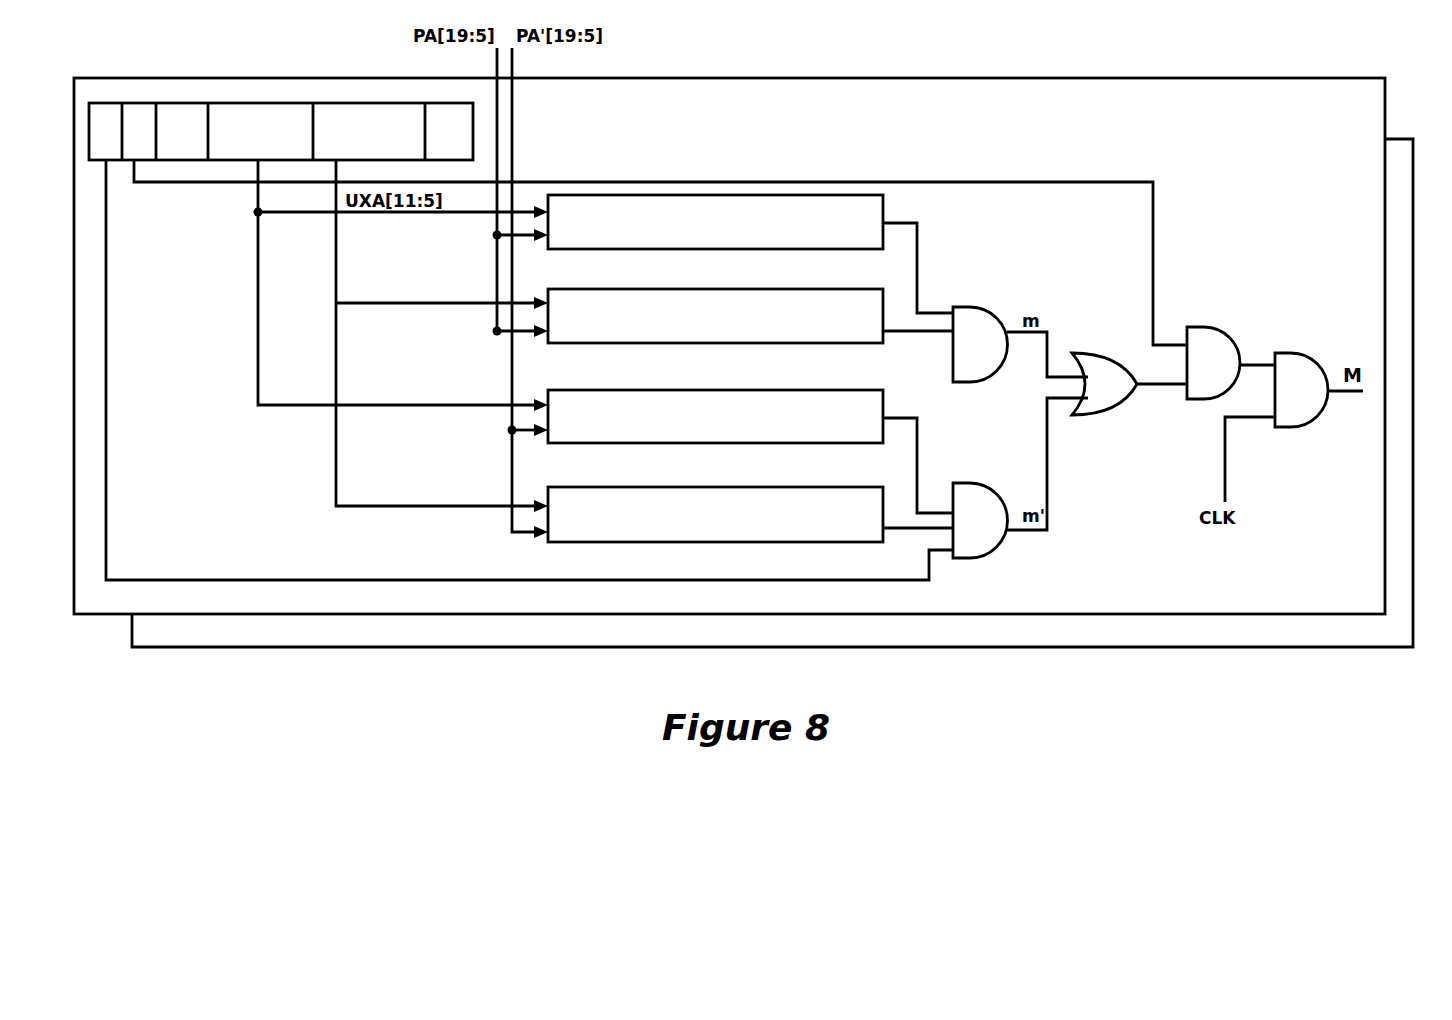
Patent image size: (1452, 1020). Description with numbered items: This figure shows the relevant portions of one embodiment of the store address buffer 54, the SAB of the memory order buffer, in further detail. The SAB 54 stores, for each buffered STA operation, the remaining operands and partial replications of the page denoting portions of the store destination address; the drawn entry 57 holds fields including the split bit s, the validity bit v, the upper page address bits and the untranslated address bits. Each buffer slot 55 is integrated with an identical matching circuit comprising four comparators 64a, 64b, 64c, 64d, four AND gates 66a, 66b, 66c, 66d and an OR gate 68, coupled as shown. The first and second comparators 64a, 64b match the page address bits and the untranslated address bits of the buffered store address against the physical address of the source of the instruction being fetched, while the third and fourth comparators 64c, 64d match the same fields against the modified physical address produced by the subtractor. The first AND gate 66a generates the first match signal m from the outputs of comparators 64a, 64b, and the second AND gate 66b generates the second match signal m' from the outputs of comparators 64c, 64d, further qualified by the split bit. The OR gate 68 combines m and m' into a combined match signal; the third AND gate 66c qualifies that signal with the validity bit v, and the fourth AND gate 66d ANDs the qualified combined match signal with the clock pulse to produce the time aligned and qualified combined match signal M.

The store address buffer 54 is at (772, 417).
The buffer slot 55 is at (1378, 110).
The TLB entry register 57 is at (218, 104).
The first comparator 64a is at (883, 212).
The second comparator 64b is at (883, 304).
The third comparator 64c is at (883, 404).
The fourth comparator 64d is at (883, 500).
The first AND gate 66a is at (968, 306).
The second AND gate 66b is at (968, 482).
The third AND gate 66c is at (1202, 326).
The fourth AND gate 66d is at (1290, 352).
The OR gate 68 is at (1090, 352).